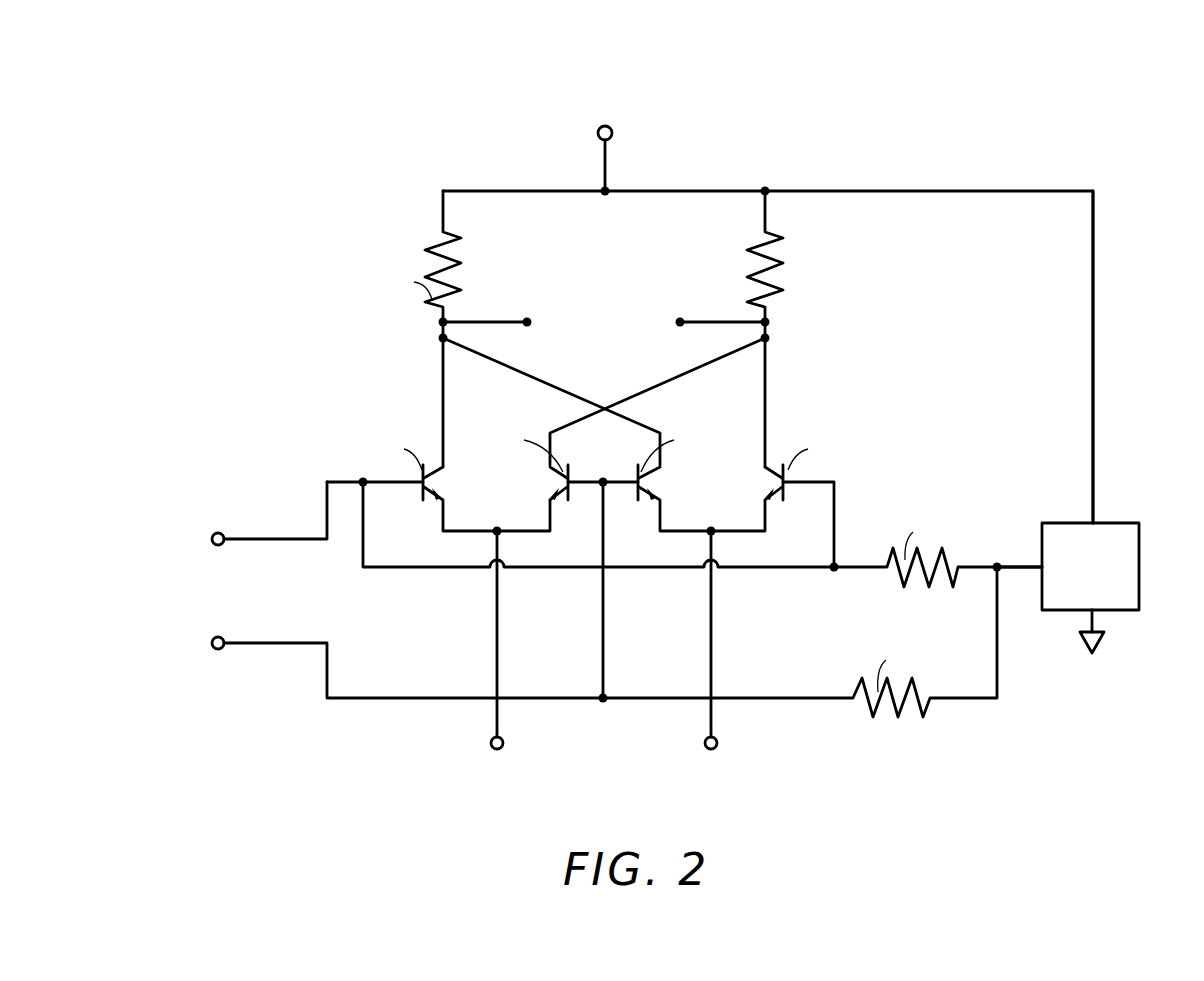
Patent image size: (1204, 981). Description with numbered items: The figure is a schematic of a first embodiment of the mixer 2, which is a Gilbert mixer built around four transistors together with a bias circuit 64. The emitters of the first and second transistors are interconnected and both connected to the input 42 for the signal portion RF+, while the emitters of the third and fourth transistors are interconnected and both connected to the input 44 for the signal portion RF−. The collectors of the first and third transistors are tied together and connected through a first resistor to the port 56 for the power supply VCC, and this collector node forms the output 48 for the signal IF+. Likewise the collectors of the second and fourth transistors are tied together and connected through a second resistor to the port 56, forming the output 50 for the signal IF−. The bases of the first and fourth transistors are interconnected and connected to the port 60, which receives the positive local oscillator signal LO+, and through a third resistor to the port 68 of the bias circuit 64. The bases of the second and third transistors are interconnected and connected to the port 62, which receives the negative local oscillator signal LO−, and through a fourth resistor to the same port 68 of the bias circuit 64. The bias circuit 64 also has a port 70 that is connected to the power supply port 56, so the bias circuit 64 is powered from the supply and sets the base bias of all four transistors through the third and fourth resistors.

The mixer 2 is at (225, 104).
The input for the signal portion RF+ 42 is at (502, 738).
The input for the signal portion RF− 44 is at (706, 739).
The output for the signal IF+ 48 is at (528, 325).
The output for the signal IF− 50 is at (679, 325).
The port for a power supply VCC 56 is at (608, 188).
The port for the signal LO+ 60 is at (223, 535).
The port for the signal LO− 62 is at (221, 648).
The bias circuit 64 is at (1118, 522).
The port of the bias circuit 68 is at (1041, 563).
The port of the bias circuit 70 is at (1090, 521).